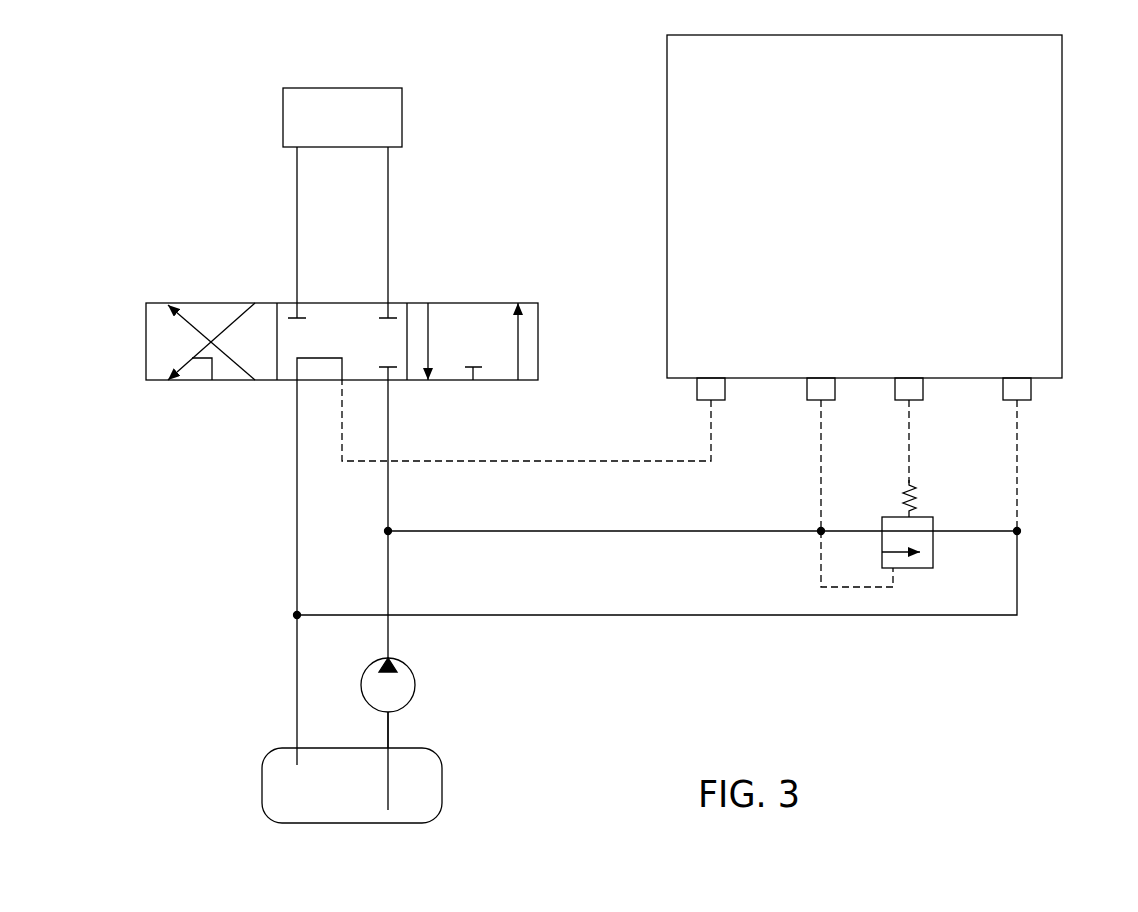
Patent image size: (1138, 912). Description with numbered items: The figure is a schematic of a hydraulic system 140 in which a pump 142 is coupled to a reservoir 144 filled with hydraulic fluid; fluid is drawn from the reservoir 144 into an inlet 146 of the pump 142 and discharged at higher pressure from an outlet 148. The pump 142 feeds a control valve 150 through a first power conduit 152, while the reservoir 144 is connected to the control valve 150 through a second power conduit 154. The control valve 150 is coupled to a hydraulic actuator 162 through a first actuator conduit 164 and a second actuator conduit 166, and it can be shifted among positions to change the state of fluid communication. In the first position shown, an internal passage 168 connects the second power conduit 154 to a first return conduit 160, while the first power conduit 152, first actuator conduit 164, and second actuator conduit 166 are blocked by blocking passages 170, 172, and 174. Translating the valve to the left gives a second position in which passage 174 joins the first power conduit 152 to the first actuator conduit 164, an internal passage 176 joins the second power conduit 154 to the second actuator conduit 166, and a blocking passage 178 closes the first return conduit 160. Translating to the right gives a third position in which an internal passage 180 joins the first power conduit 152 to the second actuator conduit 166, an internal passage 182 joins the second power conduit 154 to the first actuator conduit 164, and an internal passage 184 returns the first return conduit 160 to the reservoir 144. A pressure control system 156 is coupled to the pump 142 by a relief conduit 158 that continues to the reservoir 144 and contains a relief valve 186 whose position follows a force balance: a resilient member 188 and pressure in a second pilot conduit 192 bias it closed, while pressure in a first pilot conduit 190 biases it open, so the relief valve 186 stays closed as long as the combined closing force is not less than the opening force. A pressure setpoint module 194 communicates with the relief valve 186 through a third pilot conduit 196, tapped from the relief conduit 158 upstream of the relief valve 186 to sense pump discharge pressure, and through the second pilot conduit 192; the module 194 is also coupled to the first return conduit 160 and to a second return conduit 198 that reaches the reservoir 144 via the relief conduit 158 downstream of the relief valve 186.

The hydraulic system 140 is at (132, 502).
The pump 142 is at (415, 685).
The reservoir 144 is at (442, 782).
The inlet 146 is at (388, 713).
The outlet 148 is at (388, 658).
The control valve 150 is at (473, 302).
The first power conduit 152 is at (388, 578).
The second power conduit 154 is at (297, 547).
The pressure control system 156 is at (750, 672).
The relief conduit 158 is at (708, 533).
The first return conduit 160 is at (582, 463).
The hydraulic actuator 162 is at (323, 127).
The first actuator conduit 164 is at (388, 190).
The second actuator conduit 166 is at (297, 190).
The internal passage 168 is at (295, 372).
The blocking passage 170 is at (393, 380).
The blocking passage 172 is at (393, 312).
The blocking passage 174 is at (293, 312).
The internal passage 176 is at (428, 340).
The blocking passage 178 is at (483, 380).
The internal passage 180 is at (195, 322).
The internal passage 182 is at (198, 350).
The internal passage 184 is at (212, 363).
The relief valve 186 is at (922, 570).
The resilient member 188 is at (918, 493).
The first pilot conduit 190 is at (843, 588).
The second pilot conduit 192 is at (909, 457).
The pressure setpoint module 194 is at (848, 203).
The third pilot conduit 196 is at (821, 442).
The second return conduit 198 is at (1017, 440).